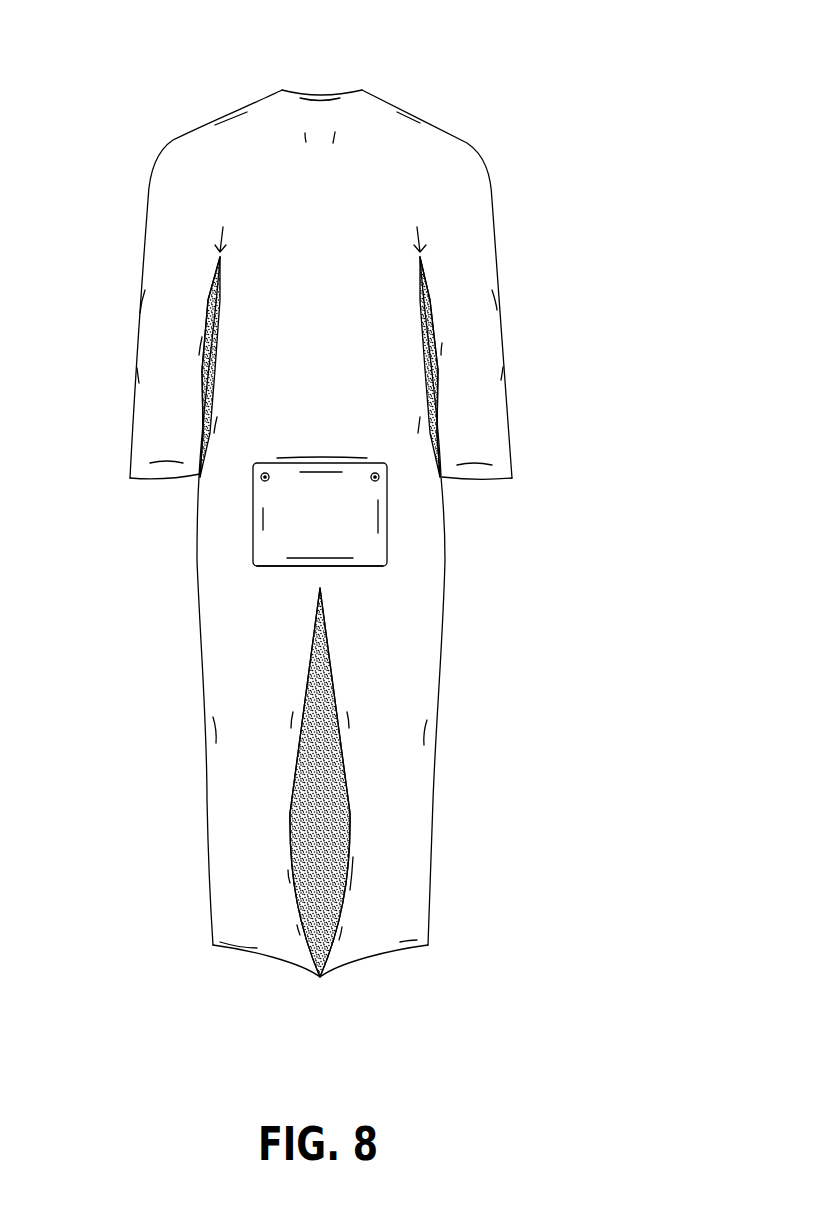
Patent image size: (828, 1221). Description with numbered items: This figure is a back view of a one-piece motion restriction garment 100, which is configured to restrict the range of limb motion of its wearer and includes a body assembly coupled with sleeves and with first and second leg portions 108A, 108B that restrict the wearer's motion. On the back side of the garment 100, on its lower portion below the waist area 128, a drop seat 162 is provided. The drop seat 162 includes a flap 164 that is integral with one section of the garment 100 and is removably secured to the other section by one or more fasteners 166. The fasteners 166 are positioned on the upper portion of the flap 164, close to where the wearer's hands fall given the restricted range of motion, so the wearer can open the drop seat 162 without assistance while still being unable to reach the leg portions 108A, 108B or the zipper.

The motion restriction garment 100 is at (552, 40).
The waist area 128 is at (405, 440).
The first leg portion 108A is at (203, 675).
The second leg portion 108B is at (437, 687).
The drop seat 162 is at (415, 523).
The flap 164 is at (288, 536).
The fasteners 166 is at (260, 477).